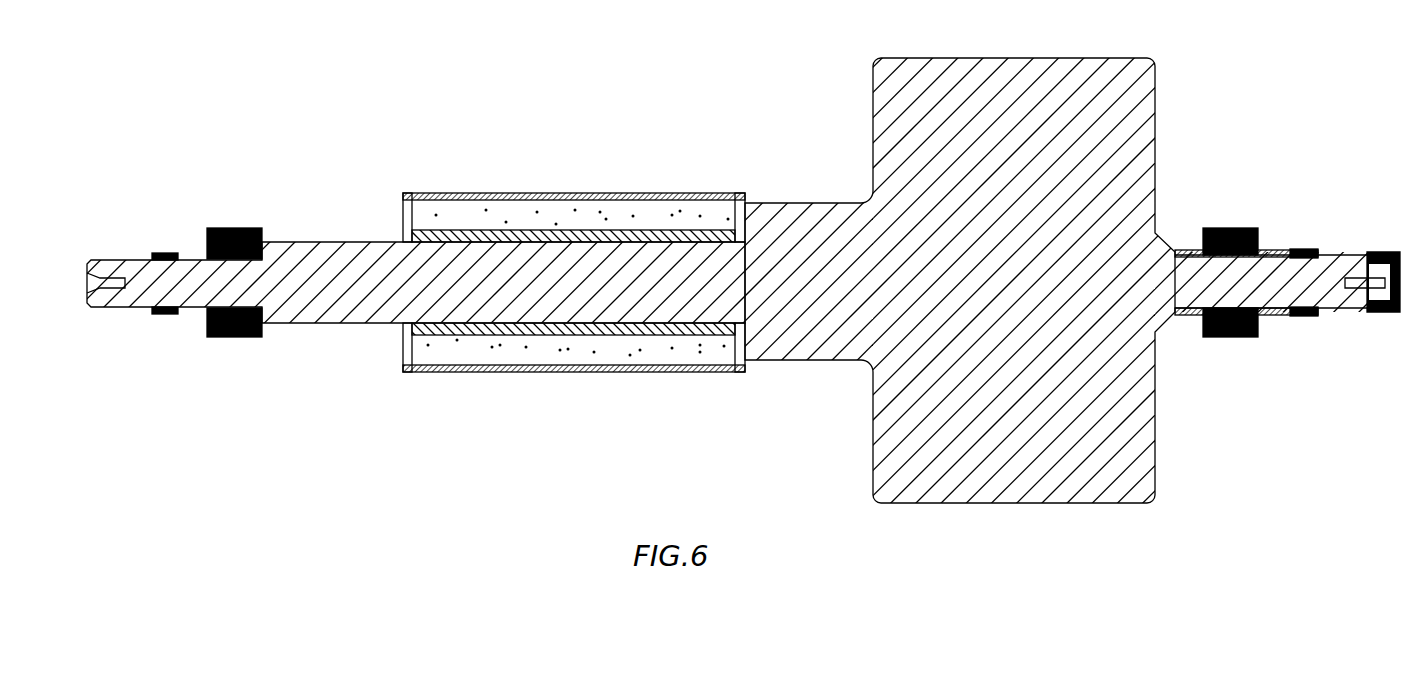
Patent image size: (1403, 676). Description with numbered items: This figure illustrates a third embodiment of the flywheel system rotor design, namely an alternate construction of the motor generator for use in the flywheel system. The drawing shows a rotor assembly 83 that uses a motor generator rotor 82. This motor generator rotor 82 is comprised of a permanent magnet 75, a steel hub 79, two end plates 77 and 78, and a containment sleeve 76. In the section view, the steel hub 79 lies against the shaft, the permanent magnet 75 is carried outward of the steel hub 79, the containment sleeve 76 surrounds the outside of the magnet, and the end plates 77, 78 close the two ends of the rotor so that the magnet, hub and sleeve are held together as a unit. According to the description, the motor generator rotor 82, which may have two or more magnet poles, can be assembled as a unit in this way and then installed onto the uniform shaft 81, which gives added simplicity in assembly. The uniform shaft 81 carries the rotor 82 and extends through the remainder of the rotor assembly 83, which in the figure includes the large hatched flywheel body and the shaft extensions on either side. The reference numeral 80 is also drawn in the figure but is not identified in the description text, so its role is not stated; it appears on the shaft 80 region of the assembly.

The permanent magnet 75 is at (513, 355).
The containment sleeve 76 is at (578, 362).
The end plate 77 is at (738, 353).
The end plate 78 is at (404, 350).
The steel hub 79 is at (567, 233).
The shaft 80 is at (426, 285).
The uniform shaft 81 is at (812, 272).
The motor generator rotor 82 is at (672, 347).
The rotor assembly 83 is at (1000, 433).